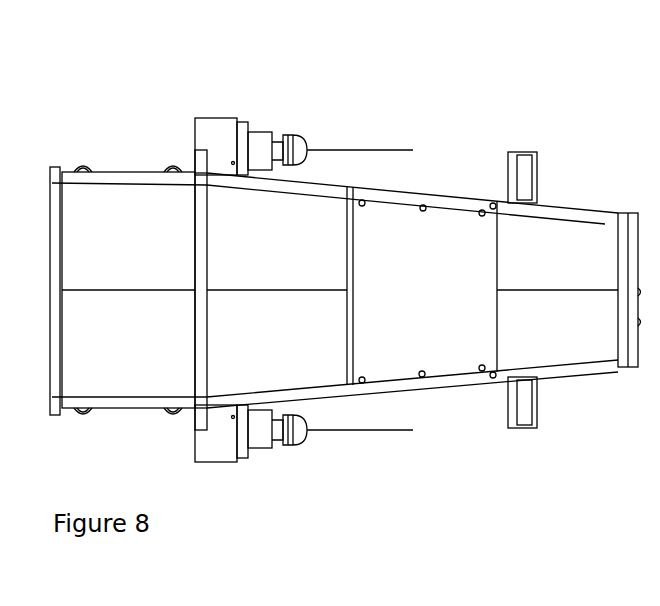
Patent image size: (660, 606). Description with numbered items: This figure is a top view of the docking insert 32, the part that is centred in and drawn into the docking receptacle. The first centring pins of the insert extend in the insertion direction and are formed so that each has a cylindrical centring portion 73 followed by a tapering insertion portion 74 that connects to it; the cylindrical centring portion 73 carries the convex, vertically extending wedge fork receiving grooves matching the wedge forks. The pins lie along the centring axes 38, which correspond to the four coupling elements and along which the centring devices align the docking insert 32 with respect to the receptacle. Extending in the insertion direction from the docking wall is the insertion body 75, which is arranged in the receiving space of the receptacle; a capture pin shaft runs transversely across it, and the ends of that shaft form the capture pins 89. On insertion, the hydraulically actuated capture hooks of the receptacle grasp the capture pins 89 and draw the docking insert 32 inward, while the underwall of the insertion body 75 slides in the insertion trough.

The docking insert 32 is at (133, 97).
The tapering insertion portion 74 is at (262, 294).
The cylindrical centring portion 73 is at (287, 138).
The insertion body 75 is at (301, 138).
The centring axis 38 is at (393, 152).
The capture pin 89 is at (523, 170).